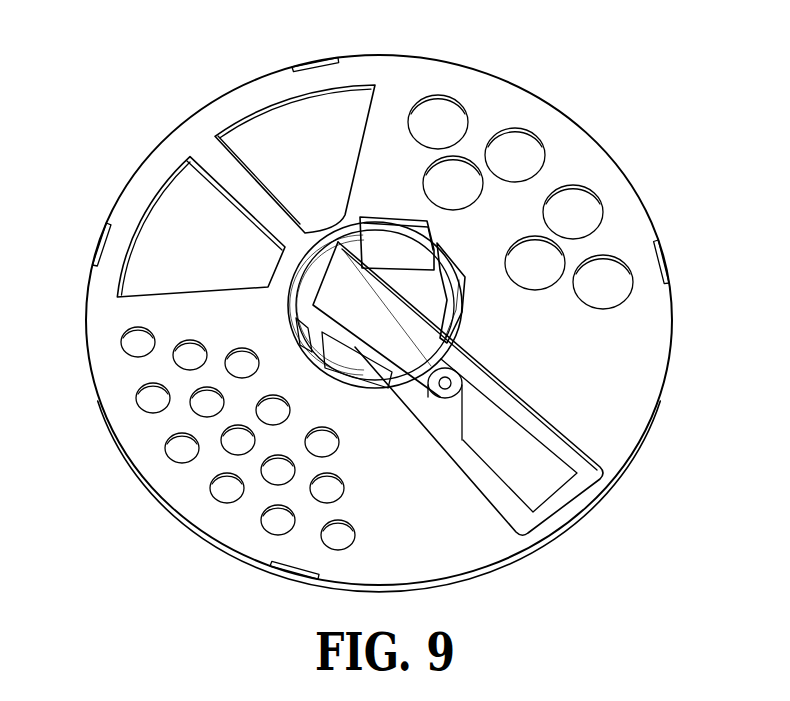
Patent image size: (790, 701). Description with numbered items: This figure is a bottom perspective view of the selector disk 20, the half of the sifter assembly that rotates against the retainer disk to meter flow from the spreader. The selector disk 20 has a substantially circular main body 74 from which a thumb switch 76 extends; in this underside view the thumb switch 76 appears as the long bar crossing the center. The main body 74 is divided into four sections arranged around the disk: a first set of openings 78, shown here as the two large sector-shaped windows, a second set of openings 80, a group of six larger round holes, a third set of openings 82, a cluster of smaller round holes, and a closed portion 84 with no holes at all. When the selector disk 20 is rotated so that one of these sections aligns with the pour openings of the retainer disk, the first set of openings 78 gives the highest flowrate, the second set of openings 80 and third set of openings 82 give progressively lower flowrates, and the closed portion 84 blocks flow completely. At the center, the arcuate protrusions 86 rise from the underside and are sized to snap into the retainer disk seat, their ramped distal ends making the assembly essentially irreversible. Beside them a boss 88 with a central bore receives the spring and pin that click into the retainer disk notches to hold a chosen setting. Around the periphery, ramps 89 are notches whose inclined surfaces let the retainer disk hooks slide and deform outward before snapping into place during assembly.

The selector disk 20 is at (128, 58).
The main body 74 is at (615, 372).
The thumb switch 76 is at (530, 470).
The first set of openings 78 is at (262, 155).
The second set of openings 80 is at (538, 187).
The third set of openings 82 is at (217, 458).
The closed portion 84 is at (430, 532).
The arcuate protrusions 86 is at (367, 352).
The boss 88 is at (448, 378).
The ramps 89 is at (313, 66).